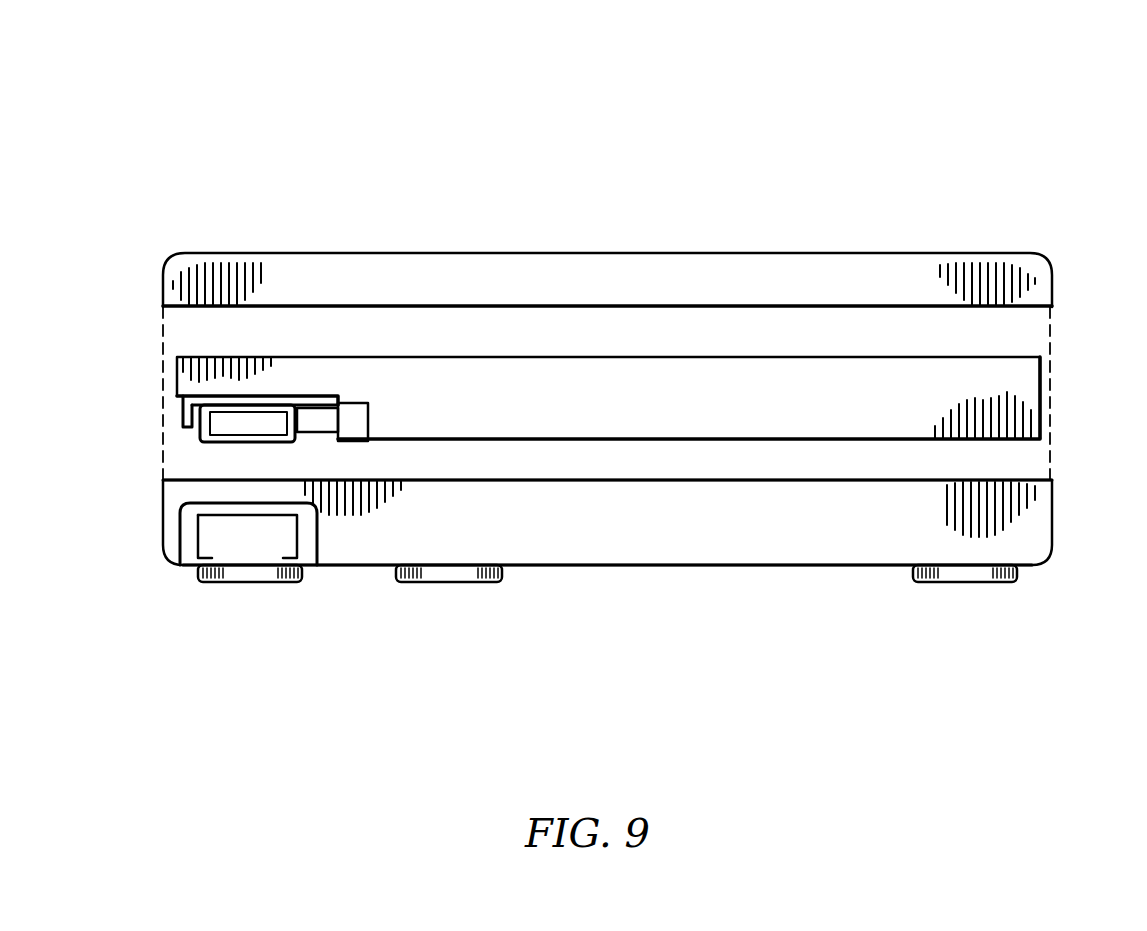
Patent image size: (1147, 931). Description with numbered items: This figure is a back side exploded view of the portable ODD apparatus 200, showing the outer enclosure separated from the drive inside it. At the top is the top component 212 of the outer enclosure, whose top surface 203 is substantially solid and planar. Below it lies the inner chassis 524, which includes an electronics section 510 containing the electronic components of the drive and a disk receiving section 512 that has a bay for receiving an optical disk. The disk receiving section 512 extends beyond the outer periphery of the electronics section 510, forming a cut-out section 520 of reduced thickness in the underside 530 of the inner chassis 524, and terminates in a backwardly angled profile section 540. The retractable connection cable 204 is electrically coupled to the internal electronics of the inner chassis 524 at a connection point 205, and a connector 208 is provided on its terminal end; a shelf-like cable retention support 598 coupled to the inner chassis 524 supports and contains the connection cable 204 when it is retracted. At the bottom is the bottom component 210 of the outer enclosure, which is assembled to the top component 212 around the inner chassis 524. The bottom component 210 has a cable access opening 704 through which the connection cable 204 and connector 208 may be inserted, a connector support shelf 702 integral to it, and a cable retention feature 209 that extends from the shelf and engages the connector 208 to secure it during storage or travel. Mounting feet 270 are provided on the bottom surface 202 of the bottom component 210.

The portable ODD apparatus 200 is at (282, 60).
The top surface 203 is at (575, 250).
The top component 212 is at (730, 270).
The backwardly angled profile section 540 is at (230, 357).
The connection cable 204 is at (310, 418).
The connection point 205 is at (347, 413).
The disk receiving section 512 is at (180, 373).
The underside 530 is at (175, 398).
The cable retention support 598 is at (180, 418).
The connector 208 is at (238, 427).
The cut-out section 520 is at (318, 440).
The inner chassis 524 is at (1015, 383).
The electronics section 510 is at (517, 423).
The bottom surface 202 is at (715, 566).
The bottom component 210 is at (810, 546).
The cable retention feature 209 is at (193, 547).
The connector support shelf 702 is at (255, 508).
The cable access opening 704 is at (242, 522).
The mounting feet 270 is at (240, 587).